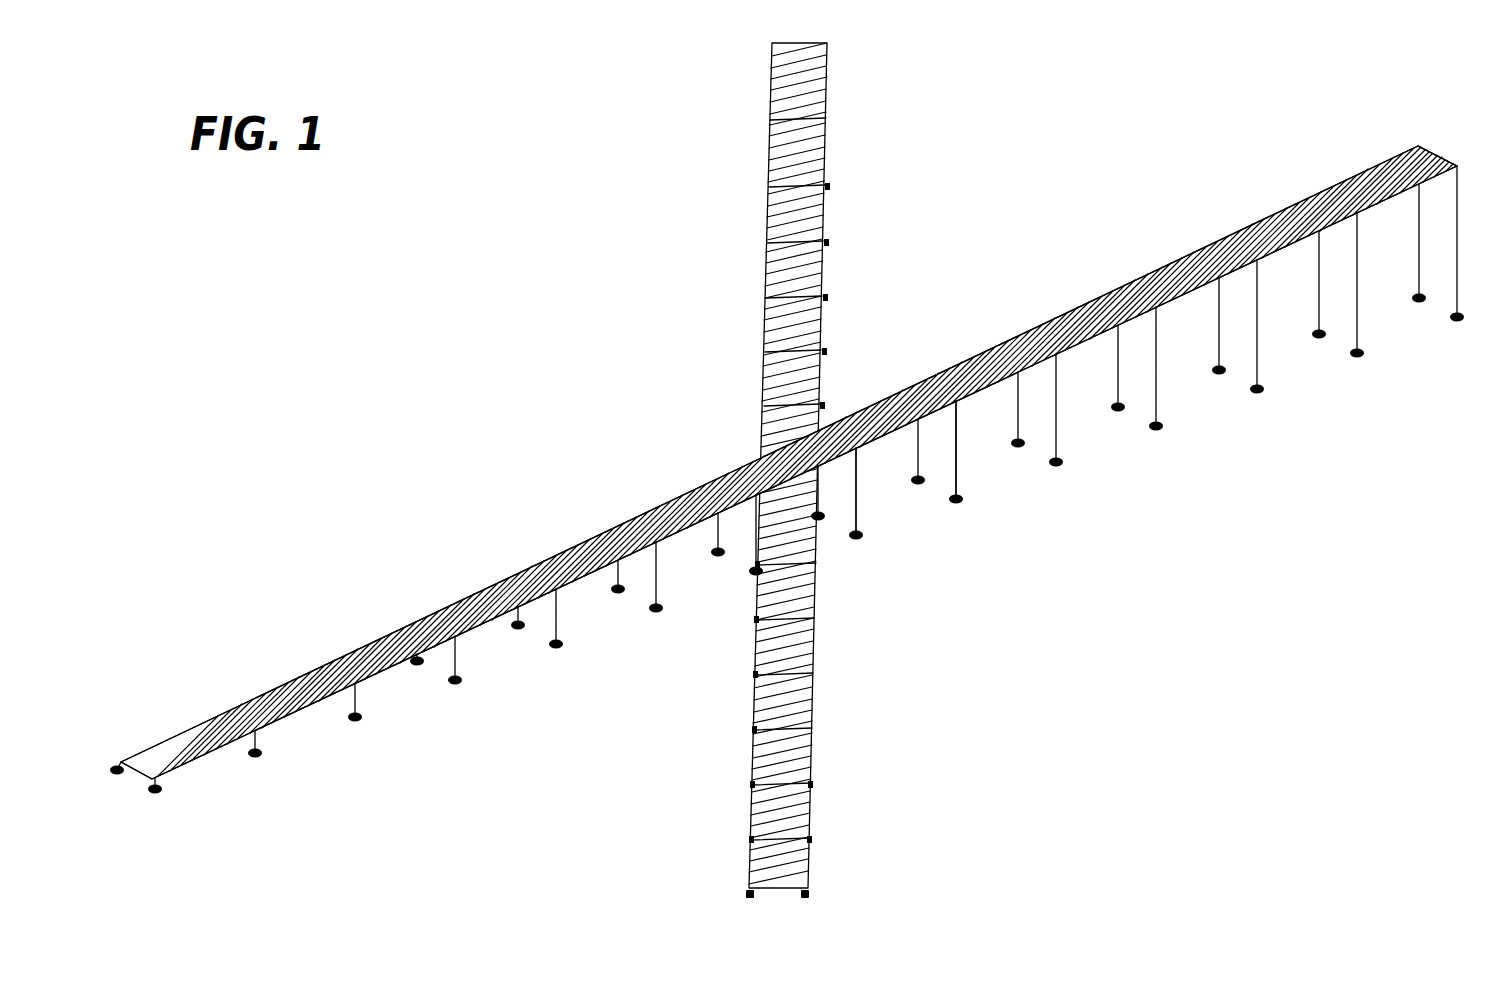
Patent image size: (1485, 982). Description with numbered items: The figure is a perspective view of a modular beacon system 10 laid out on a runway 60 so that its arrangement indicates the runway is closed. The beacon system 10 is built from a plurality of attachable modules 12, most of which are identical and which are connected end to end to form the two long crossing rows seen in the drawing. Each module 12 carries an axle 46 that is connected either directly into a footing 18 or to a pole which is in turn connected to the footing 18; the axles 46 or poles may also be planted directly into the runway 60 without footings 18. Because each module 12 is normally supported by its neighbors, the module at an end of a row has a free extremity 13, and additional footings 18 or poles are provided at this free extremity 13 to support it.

The modular beacon system 10 is at (940, 178).
The attachable module 12 is at (1153, 272).
The free extremity 13 is at (1454, 163).
The footing 18 is at (862, 532).
The axle 46 is at (1357, 322).
The runway 60 is at (406, 424).